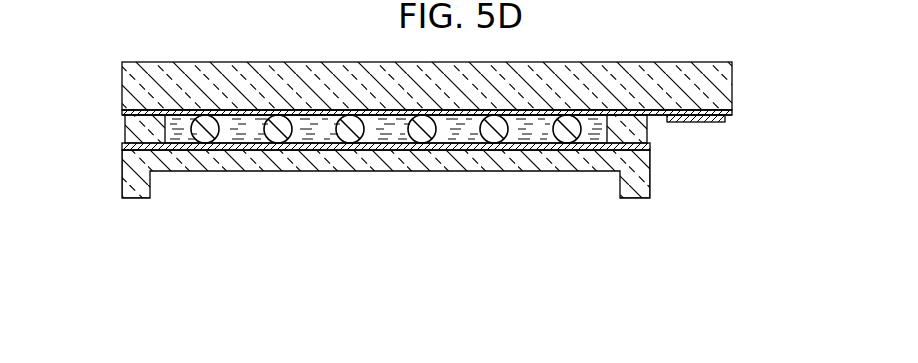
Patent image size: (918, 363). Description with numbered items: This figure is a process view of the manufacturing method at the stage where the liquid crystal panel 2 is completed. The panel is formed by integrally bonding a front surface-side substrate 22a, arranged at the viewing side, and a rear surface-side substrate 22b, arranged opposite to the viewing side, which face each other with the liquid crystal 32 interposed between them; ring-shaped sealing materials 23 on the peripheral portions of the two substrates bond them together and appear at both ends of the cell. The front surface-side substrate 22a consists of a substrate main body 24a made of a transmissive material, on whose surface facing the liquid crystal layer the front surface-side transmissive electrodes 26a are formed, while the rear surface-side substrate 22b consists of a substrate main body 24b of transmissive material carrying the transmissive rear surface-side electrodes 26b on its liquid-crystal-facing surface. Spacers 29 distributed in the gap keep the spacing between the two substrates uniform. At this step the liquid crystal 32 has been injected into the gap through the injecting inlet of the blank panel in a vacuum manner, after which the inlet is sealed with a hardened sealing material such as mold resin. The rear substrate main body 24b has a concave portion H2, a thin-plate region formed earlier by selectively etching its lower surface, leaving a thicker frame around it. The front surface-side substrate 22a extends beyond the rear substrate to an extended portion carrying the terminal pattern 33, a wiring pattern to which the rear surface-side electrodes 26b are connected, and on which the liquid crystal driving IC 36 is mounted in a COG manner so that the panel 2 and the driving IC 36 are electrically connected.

The liquid crystal panel 2 is at (466, 142).
The front surface-side substrate 22a is at (487, 111).
The substrate main body 24a is at (732, 88).
The front surface-side transmissive electrodes 26a is at (732, 114).
The liquid crystal driving IC 36 is at (710, 124).
The terminal pattern 33 is at (661, 112).
The sealing materials 23 is at (128, 126).
The spacers 29 is at (495, 140).
The liquid crystal 32 is at (313, 136).
The rear surface-side substrate 22b is at (386, 208).
The rear surface-side electrodes 26b is at (577, 152).
The substrate main body 24b is at (557, 236).
The concave portion H2 is at (403, 188).